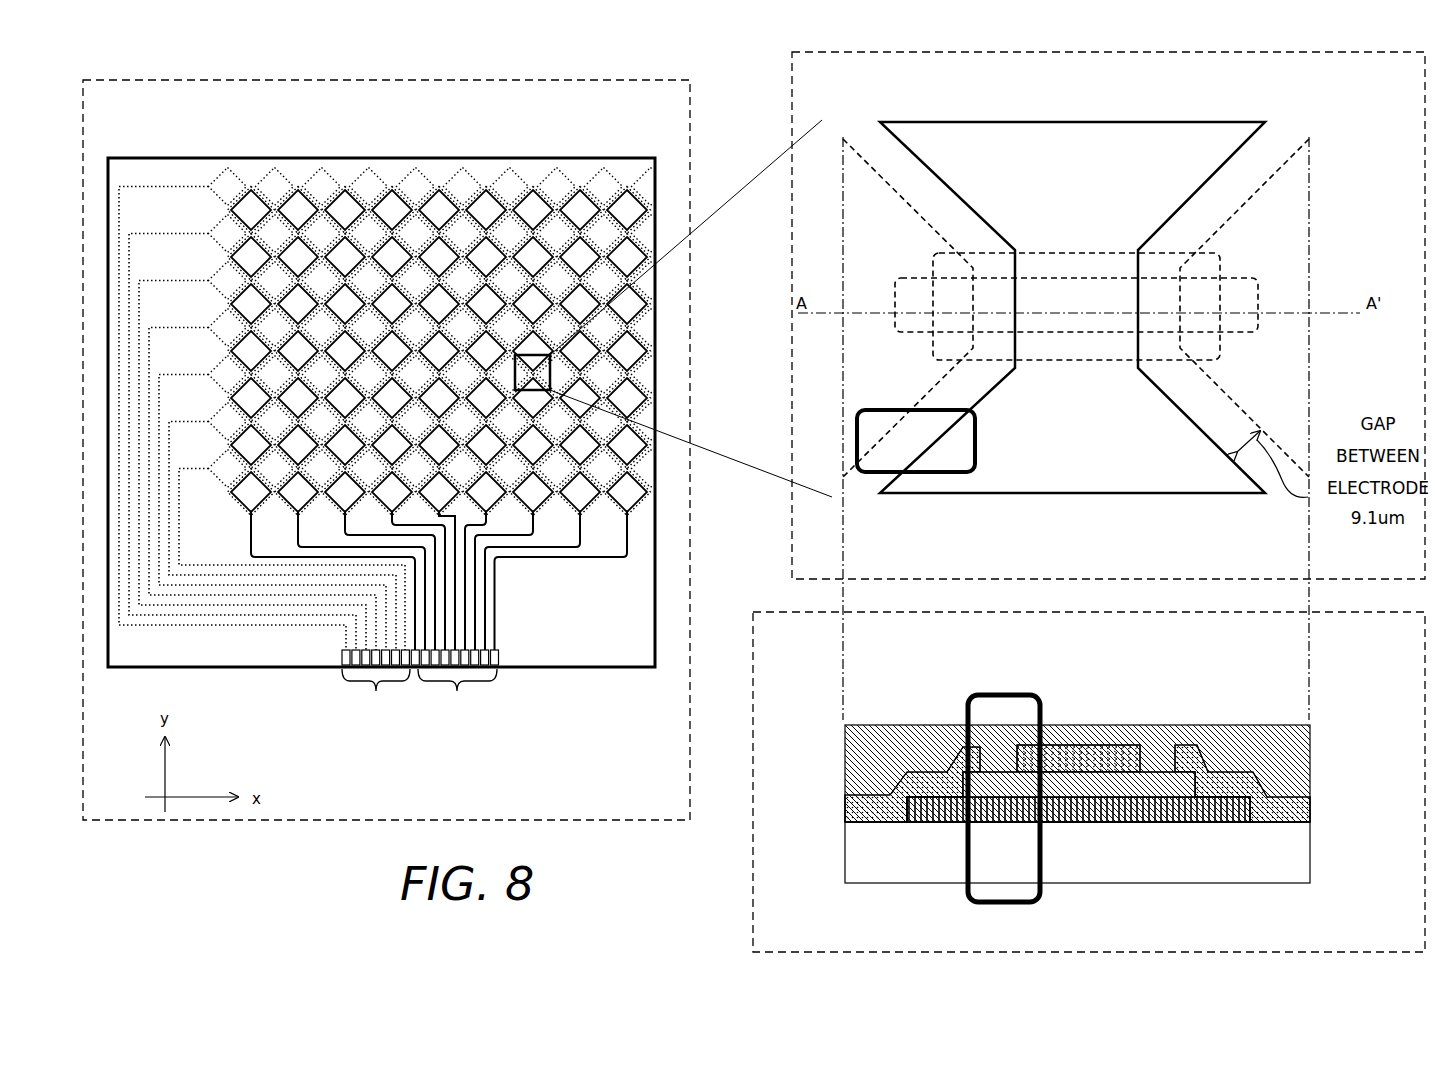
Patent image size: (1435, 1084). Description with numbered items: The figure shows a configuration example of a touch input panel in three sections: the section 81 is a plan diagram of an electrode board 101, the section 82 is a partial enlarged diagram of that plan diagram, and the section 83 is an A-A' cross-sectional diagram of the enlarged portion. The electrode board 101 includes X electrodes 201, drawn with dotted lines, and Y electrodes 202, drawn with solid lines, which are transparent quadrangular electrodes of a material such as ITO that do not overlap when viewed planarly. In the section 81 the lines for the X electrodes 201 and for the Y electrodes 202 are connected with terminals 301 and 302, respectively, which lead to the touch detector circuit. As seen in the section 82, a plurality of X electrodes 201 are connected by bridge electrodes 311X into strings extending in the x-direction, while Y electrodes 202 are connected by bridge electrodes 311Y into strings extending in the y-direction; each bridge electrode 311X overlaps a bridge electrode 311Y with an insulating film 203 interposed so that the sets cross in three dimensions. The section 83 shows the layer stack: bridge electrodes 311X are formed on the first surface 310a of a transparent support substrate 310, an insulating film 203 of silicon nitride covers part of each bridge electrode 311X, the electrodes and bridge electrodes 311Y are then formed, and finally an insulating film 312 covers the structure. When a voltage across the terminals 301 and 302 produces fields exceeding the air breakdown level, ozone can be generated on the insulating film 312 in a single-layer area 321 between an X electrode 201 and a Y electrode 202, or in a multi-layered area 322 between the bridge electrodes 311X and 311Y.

The section (plan diagram) 81 is at (209, 109).
The section (partial enlarged diagram) 82 is at (1087, 81).
The section (A-A' cross-sectional diagram) 83 is at (867, 937).
The electrode board 101 is at (385, 158).
The X electrode 201 is at (280, 186).
The Y electrode 202 is at (480, 207).
The insulating film 203 is at (1090, 362).
The terminal 301 is at (376, 703).
The terminal 302 is at (457, 703).
The support substrate 310 is at (855, 856).
The first surface 310a is at (1312, 822).
The bridge electrode (first connection member) 311X is at (1258, 296).
The bridge electrode (second connection member) 311Y is at (1220, 282).
The insulating film 312 is at (920, 725).
The area 321 is at (980, 460).
The area 322 is at (1005, 695).